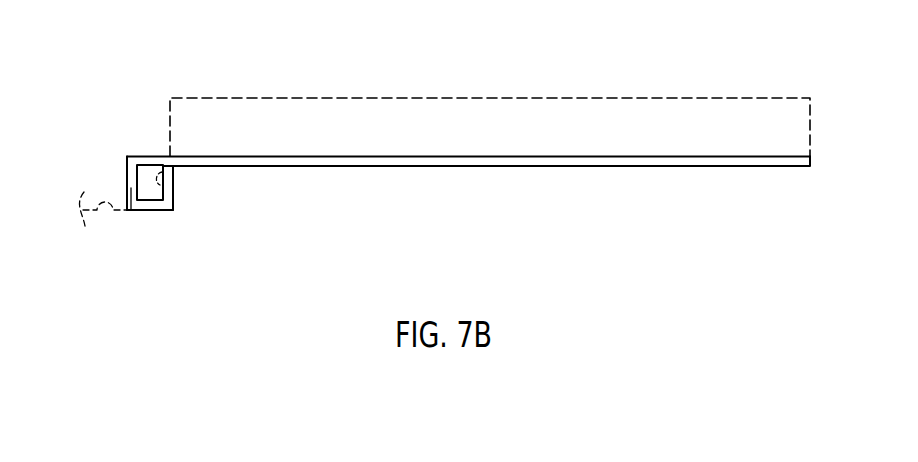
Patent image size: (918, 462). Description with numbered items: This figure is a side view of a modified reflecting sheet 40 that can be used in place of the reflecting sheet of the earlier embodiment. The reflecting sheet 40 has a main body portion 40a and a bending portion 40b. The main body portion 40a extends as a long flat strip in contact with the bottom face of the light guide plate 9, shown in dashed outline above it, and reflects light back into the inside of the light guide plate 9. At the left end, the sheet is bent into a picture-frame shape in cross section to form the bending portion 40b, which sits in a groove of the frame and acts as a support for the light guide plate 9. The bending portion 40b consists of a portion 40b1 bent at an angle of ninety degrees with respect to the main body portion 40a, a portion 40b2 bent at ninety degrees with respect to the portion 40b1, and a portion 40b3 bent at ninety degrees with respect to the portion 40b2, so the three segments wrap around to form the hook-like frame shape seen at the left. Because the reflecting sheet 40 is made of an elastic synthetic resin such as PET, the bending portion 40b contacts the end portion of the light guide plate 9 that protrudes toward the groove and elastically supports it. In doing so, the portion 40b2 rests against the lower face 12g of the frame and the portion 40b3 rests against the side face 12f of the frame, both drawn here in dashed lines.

The light guide plate 9 is at (542, 122).
The reflecting sheet 40 is at (488, 168).
The main body portion 40a is at (568, 162).
The bending portion 40b is at (125, 174).
The portion bent at ninety degrees to the main body portion 40b1 is at (131, 188).
The portion bent at ninety degrees to portion 40b1 40b2 is at (153, 206).
The portion bent at ninety degrees to portion 40b2 40b3 is at (163, 192).
The side face 12f is at (163, 172).
The lower face 12g is at (104, 216).